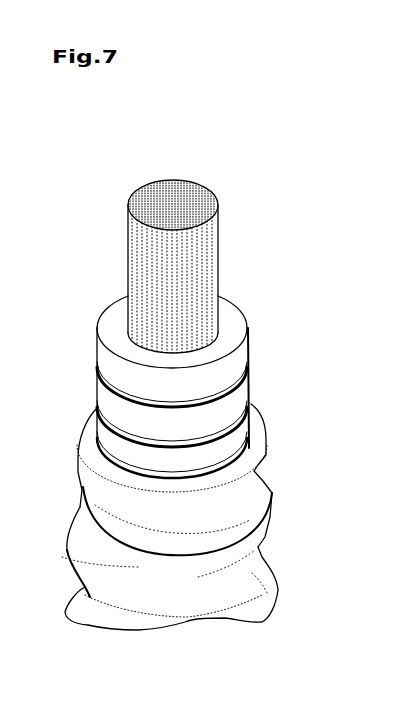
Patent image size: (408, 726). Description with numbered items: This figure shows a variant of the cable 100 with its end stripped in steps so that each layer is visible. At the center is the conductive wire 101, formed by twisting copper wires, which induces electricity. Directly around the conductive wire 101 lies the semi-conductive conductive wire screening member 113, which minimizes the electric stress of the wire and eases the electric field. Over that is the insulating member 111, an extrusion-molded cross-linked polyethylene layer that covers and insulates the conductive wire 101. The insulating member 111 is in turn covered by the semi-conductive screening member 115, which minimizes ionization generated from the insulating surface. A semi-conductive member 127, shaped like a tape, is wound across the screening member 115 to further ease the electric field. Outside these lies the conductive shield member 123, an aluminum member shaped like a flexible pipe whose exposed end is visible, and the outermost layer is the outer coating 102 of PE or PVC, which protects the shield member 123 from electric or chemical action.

The cable 100 is at (246, 161).
The conductive wire 101 is at (220, 234).
The conductive wire screening member 113 is at (215, 288).
The insulating member 111 is at (240, 357).
The screening member 115 is at (246, 401).
The semi-conductive member 127 is at (240, 438).
The shield member 123 is at (270, 500).
The outer coating 102 is at (268, 581).